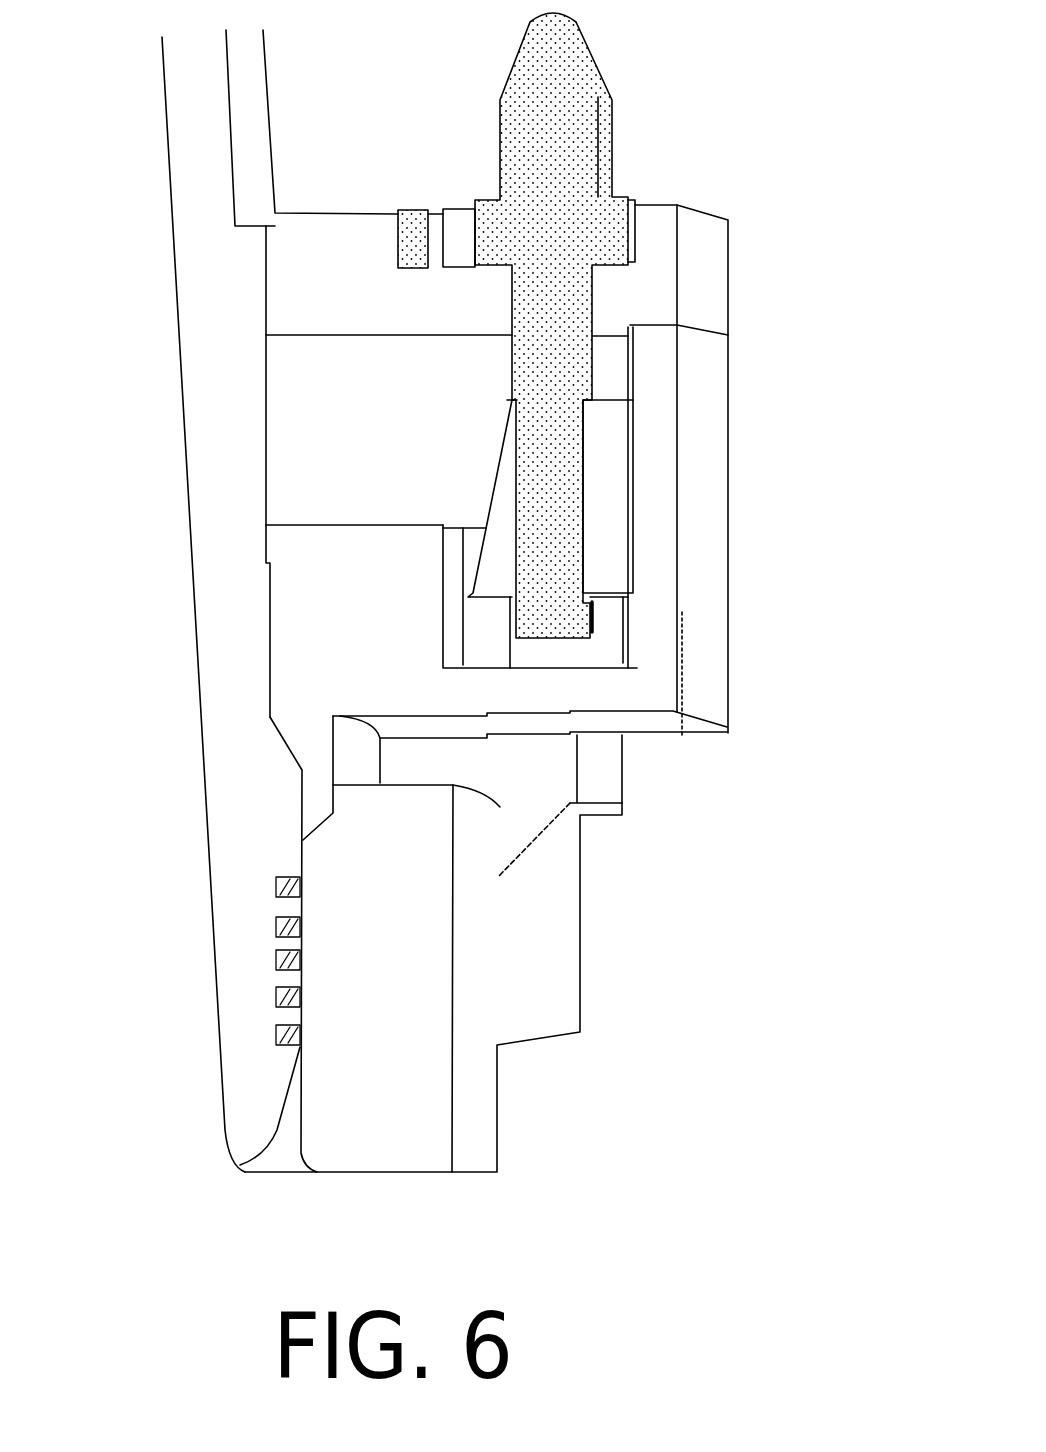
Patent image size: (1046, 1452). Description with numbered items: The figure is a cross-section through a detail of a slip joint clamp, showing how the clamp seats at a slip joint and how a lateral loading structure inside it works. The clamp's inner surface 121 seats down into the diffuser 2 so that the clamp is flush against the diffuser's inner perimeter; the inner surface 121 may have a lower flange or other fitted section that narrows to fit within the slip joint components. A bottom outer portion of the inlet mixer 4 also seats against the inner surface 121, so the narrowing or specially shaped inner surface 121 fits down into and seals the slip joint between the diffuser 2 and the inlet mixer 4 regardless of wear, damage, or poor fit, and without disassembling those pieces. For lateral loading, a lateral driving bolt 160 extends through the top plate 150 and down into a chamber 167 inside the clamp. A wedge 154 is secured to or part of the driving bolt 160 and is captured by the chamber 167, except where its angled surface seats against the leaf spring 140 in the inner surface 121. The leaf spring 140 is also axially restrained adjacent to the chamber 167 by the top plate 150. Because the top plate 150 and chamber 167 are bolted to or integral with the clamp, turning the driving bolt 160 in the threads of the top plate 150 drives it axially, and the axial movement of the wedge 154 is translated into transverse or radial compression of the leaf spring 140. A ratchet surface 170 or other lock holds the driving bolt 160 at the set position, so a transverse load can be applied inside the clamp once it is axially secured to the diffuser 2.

The diffuser 2 is at (505, 960).
The inlet mixer 4 is at (197, 143).
The inner surface 121 is at (297, 760).
The leaf spring 140 is at (347, 455).
The top plate 150 is at (700, 280).
The wedge 154 is at (607, 478).
The chamber 167 is at (660, 612).
The lateral driving bolt 160 is at (572, 140).
The ratchet surface 170 is at (423, 233).